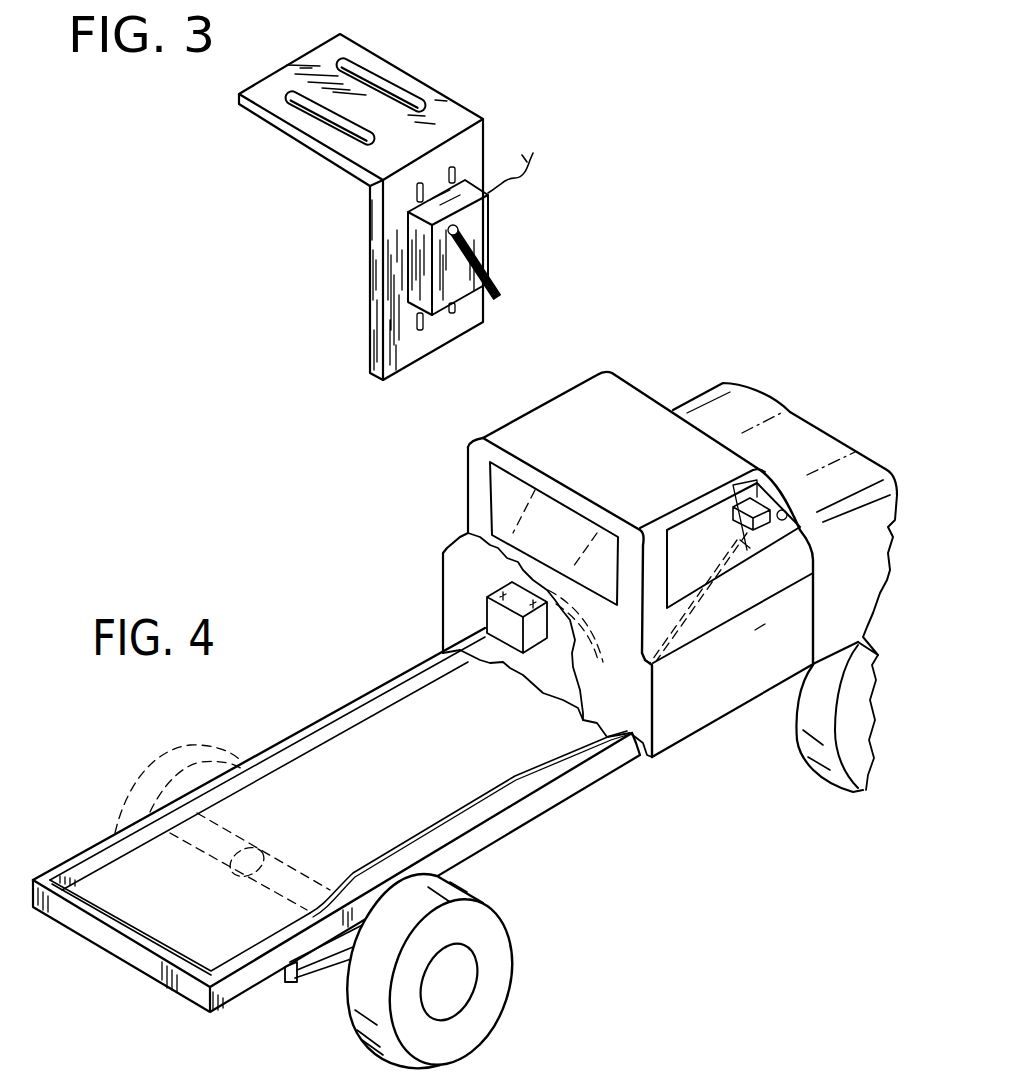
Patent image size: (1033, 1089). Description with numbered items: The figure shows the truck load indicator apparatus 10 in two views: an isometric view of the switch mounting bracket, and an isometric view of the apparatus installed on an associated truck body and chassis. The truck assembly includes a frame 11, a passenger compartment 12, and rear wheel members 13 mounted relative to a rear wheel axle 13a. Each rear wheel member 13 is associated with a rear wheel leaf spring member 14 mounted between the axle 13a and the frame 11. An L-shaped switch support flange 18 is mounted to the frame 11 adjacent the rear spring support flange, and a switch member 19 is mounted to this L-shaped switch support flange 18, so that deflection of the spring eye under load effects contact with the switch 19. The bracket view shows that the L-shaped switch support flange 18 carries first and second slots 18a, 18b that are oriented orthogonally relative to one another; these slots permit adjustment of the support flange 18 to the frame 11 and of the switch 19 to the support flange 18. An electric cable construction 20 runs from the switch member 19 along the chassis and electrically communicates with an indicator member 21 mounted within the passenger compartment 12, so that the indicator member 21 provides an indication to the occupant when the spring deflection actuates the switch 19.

In FIG. 4, the truck load indicator apparatus 10 is at (373, 588).
In FIG. 4, the frame 11 is at (334, 730).
In FIG. 4, the passenger compartment 12 is at (788, 513).
In FIG. 4, the rear wheel members 13 is at (189, 748).
In FIG. 4, the rear wheel axle 13a is at (322, 824).
In FIG. 4, the rear wheel leaf spring member 14 is at (318, 977).
In FIG. 3, the L-shaped switch support flange 18 is at (390, 312).
In FIG. 3, the first slot 18a is at (406, 97).
In FIG. 3, the second slot 18b is at (427, 330).
In FIG. 3, the switch member 19 is at (480, 221).
In FIG. 3, the electric cable construction 20 is at (517, 178).
In FIG. 4, the electric cable construction 20 is at (413, 832).
In FIG. 4, the indicator member 21 is at (747, 493).